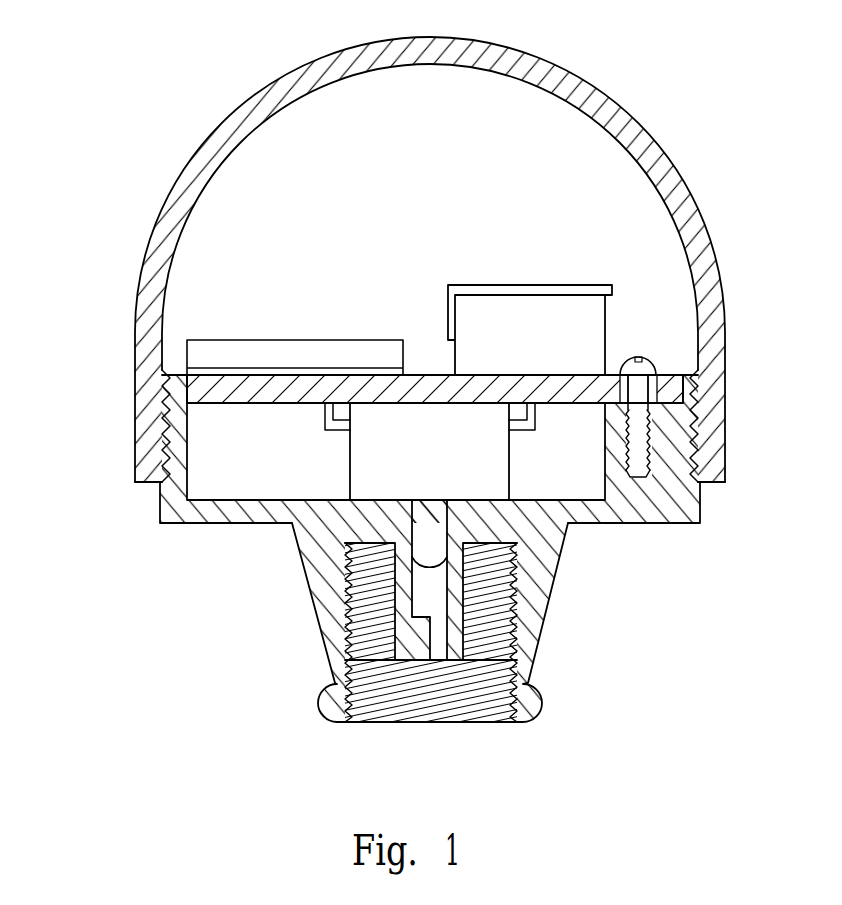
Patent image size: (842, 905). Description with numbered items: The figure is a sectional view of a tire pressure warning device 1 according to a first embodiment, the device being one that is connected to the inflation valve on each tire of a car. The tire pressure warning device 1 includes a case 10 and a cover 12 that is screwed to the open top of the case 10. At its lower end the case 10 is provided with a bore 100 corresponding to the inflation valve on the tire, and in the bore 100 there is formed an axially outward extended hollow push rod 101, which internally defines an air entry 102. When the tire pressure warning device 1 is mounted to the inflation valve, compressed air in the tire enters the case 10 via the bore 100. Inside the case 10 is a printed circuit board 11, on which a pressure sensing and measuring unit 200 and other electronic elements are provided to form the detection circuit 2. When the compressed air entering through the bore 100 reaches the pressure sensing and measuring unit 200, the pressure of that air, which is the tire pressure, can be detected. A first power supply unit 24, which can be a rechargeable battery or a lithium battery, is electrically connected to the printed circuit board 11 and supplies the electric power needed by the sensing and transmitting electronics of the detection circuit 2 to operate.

The tire pressure warning device 1 is at (664, 96).
The detection circuit 2 is at (424, 358).
The case 10 is at (675, 503).
The printed circuit board 11 is at (247, 390).
The cover 12 is at (715, 345).
The first power supply unit 24 is at (588, 322).
The bore 100 is at (383, 682).
The hollow push rod 101 is at (457, 603).
The air entry 102 is at (442, 643).
The pressure sensing and measuring unit 200 is at (483, 473).